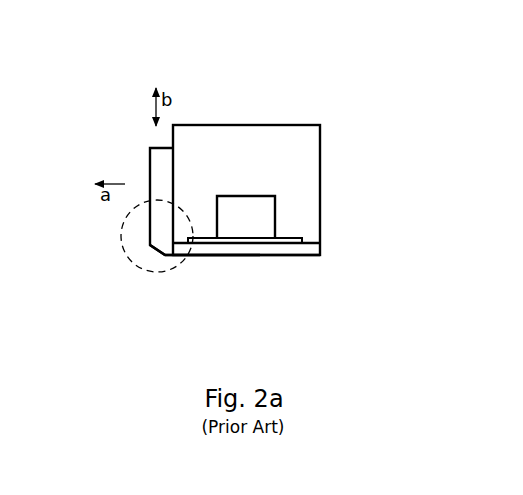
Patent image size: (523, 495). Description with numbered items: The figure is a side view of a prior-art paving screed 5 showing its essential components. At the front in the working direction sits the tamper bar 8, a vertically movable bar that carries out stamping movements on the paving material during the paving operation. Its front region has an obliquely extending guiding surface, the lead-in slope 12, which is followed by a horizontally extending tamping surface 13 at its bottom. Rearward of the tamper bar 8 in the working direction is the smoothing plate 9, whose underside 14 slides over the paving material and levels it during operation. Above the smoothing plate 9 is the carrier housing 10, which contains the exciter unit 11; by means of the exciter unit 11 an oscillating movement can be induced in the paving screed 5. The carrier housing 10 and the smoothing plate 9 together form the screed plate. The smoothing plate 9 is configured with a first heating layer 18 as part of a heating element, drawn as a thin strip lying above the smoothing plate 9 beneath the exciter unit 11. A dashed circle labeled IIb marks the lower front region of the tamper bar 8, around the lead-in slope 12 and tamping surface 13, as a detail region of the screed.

The paving screed 5 is at (360, 108).
The tamper bar 8 is at (162, 183).
The smoothing plate 9 is at (297, 252).
The carrier housing 10 is at (285, 148).
The exciter unit 11 is at (252, 208).
The lead-in slope 12 is at (155, 247).
The tamping surface 13 is at (167, 255).
The underside 14 is at (218, 257).
The first heating layer 18 is at (278, 243).
The detail region of Fig. 2b IIb is at (162, 223).